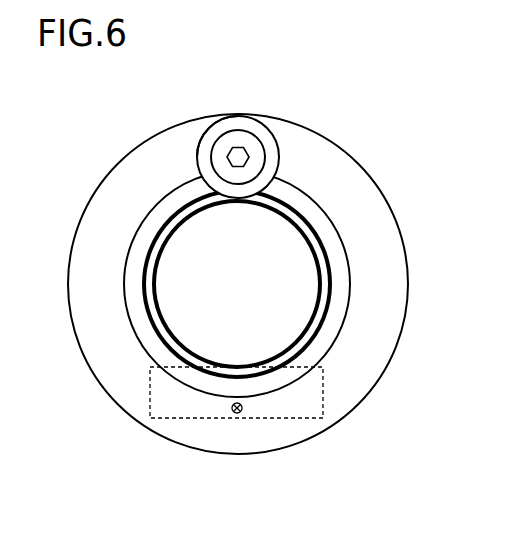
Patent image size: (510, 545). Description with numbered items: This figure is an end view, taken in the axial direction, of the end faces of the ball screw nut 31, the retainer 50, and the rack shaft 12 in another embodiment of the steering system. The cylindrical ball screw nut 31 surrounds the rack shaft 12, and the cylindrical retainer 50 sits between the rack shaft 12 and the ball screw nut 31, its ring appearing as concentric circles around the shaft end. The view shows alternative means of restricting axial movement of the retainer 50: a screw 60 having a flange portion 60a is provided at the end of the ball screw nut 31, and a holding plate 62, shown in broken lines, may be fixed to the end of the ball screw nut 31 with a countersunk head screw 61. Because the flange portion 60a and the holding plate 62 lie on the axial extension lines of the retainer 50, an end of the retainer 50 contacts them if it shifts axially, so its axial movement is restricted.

The ball screw nut 31 is at (313, 127).
The retainer 50 is at (328, 244).
The rack shaft 12 is at (310, 287).
The screw 60 is at (258, 138).
The flange portion 60a is at (199, 128).
The holding plate 62 is at (322, 388).
The countersunk head screw 61 is at (243, 407).